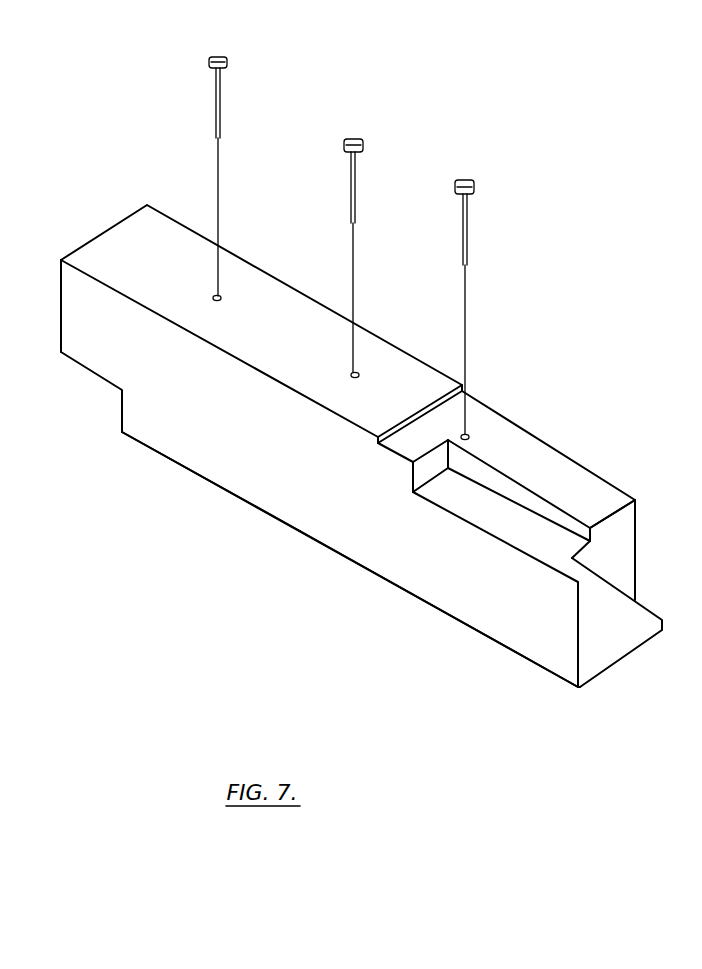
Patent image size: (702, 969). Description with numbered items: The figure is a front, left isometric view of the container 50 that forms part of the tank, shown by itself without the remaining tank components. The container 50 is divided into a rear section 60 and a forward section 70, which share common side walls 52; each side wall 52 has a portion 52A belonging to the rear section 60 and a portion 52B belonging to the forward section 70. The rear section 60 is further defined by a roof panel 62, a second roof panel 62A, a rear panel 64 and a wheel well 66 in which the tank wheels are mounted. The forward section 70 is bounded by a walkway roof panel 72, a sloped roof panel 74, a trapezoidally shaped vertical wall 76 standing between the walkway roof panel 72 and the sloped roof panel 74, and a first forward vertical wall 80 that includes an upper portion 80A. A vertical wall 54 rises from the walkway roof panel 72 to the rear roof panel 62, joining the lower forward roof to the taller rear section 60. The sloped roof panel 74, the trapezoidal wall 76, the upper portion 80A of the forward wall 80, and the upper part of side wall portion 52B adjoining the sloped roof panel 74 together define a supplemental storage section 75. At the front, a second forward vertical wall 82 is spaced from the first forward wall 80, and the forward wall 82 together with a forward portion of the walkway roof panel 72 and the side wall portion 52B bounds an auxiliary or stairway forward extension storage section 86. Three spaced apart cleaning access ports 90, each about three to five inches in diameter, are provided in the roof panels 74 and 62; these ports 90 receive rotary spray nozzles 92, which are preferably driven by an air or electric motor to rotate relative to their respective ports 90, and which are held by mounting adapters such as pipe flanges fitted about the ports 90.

The container 50 is at (376, 463).
The side walls 52 is at (257, 484).
The side wall portion 52A is at (167, 428).
The side wall portion 52B is at (530, 628).
The vertical wall 54 is at (424, 466).
The rear section 60 is at (183, 495).
The roof panel 62 is at (193, 257).
The roof panel 62A is at (480, 403).
The rear panel 64 is at (98, 236).
The wheel well 66 is at (101, 399).
The forward section 70 is at (442, 657).
The walkway roof panel 72 is at (482, 507).
The sloped roof panel 74 is at (582, 486).
The supplemental storage section 75 is at (569, 424).
The trapezoidally shaped vertical wall 76 is at (490, 477).
The first forward vertical wall 80 is at (630, 577).
The upper portion of forward wall 80A is at (630, 512).
The second forward vertical wall 82 is at (628, 647).
The stairway forward extension storage section 86 is at (613, 696).
The cleaning access ports 90 is at (221, 295).
The rotary spray nozzles 92 is at (220, 110).